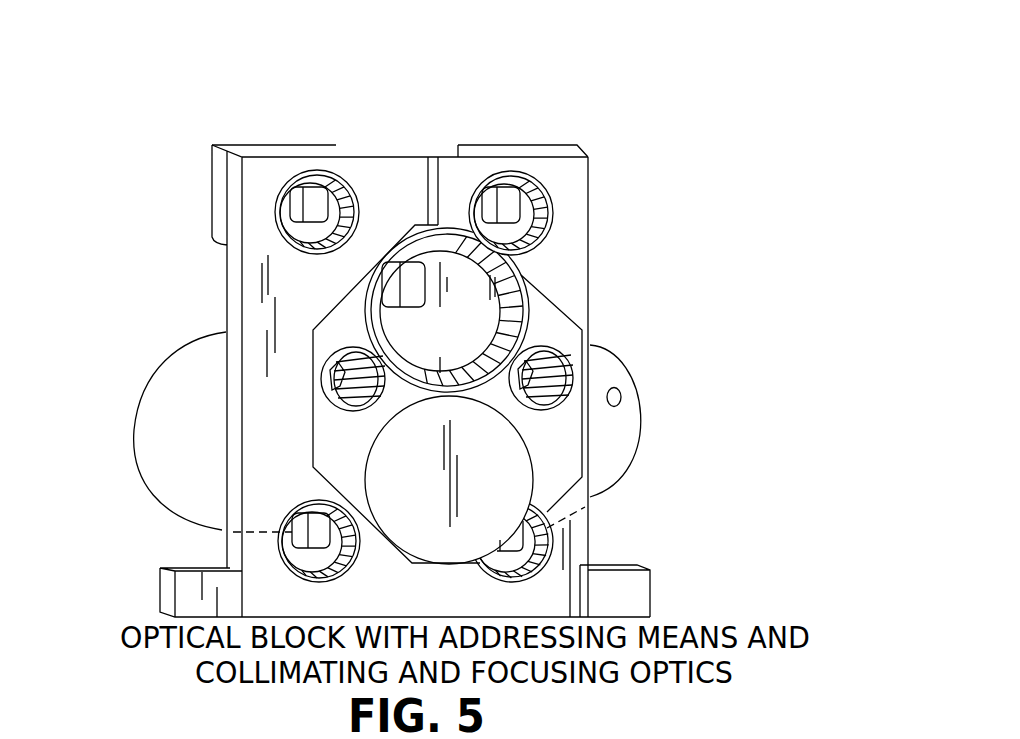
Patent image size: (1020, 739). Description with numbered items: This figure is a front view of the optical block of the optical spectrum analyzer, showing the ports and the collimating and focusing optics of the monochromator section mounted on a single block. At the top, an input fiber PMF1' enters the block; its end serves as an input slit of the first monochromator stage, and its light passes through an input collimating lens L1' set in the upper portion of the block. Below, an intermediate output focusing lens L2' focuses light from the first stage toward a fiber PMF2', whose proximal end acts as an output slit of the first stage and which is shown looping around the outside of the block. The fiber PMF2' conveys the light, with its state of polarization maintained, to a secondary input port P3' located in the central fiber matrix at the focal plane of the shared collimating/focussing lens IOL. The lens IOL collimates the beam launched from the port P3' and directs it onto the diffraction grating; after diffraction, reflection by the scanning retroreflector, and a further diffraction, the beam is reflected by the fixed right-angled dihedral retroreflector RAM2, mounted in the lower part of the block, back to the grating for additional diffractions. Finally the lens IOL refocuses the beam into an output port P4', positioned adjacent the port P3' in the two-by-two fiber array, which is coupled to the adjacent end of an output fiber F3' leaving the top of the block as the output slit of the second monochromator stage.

The input fiber PMF1' is at (322, 97).
The output fiber F3' is at (515, 78).
The input collimating lens L1' is at (249, 212).
The intermediate output focusing lens L2' is at (245, 541).
The secondary input port P3' is at (297, 284).
The output port P4' is at (562, 260).
The shared collimating/focussing lens IOL is at (483, 333).
The fixed right-angled dihedral retroreflector RAM2 is at (482, 478).
The fiber PMF2' is at (143, 431).